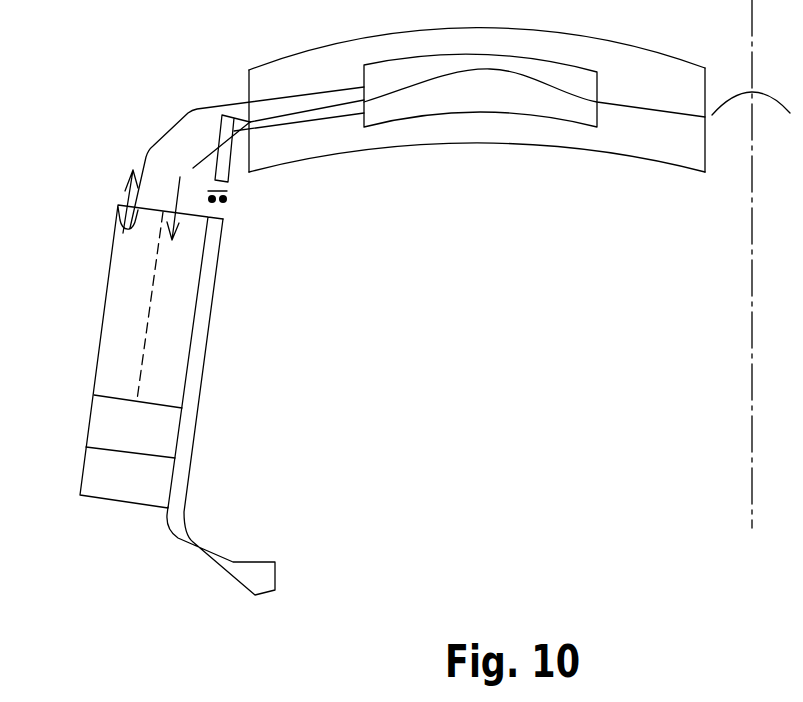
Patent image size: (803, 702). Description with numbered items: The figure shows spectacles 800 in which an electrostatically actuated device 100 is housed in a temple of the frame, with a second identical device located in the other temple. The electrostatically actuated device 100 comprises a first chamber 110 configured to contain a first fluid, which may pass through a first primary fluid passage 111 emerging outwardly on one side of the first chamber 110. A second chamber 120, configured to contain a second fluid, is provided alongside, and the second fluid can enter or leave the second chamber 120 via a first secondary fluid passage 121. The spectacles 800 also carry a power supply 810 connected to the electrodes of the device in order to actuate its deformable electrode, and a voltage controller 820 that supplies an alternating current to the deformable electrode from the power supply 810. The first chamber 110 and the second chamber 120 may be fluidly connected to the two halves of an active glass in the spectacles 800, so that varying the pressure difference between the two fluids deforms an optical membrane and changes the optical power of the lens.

The electrostatically actuated device 100 is at (88, 313).
The first chamber 110 is at (122, 352).
The first primary fluid passage 111 is at (118, 207).
The second chamber 120 is at (163, 383).
The first secondary fluid passage 121 is at (193, 168).
The spectacles 800 is at (441, 225).
The power supply 810 is at (86, 484).
The voltage controller 820 is at (98, 427).